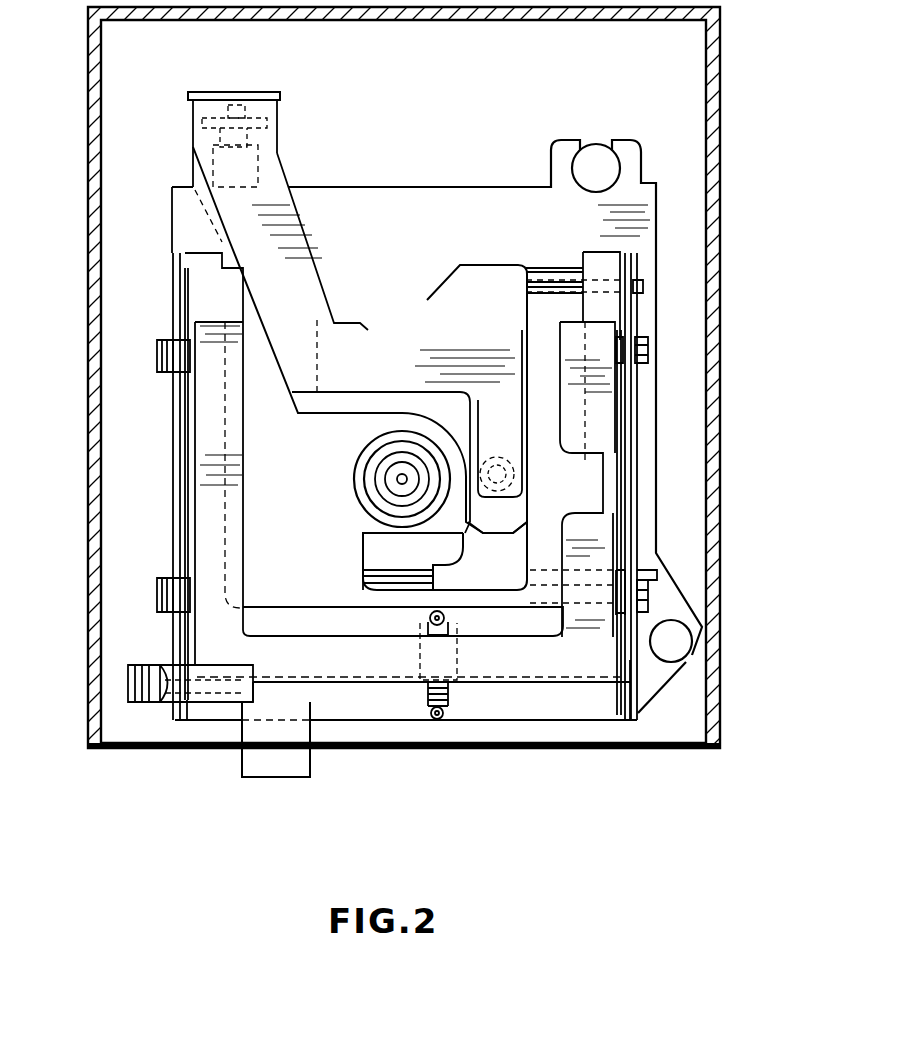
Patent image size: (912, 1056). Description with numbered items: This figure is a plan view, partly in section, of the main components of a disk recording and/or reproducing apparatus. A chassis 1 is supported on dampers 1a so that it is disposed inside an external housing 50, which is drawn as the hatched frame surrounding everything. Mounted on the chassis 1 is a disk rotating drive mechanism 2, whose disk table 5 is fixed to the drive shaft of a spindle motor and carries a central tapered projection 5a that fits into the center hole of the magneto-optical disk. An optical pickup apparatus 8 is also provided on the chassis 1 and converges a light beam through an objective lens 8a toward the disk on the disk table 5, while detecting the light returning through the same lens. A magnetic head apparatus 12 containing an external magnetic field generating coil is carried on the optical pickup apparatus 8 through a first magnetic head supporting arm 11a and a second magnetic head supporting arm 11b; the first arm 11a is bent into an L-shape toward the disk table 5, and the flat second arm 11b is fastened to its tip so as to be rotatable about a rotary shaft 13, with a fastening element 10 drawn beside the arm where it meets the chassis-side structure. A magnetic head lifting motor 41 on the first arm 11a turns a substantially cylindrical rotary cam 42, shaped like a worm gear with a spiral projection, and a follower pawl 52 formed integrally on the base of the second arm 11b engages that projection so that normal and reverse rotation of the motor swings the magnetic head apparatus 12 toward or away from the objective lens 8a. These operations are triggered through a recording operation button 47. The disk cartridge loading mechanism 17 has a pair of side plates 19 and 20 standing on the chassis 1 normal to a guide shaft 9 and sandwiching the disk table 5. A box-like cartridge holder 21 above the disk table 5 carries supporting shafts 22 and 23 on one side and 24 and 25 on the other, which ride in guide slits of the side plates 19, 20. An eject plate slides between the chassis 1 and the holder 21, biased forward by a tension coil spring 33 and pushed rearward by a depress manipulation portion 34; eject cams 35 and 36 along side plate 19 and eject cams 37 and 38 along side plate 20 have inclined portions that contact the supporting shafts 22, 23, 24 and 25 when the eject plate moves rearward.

The chassis 1 is at (647, 428).
The damper 1a is at (598, 143).
The disk rotating drive mechanism 2 is at (363, 545).
The disk table 5 is at (357, 503).
The tapered projection 5a is at (357, 485).
The optical pickup apparatus 8 is at (488, 583).
The objective lens 8a is at (520, 497).
The guide shaft 9 is at (388, 580).
The bolt 10 is at (553, 283).
The first magnetic head supporting arm 11a is at (322, 412).
The second magnetic head supporting arm 11b is at (407, 337).
The magnetic head apparatus 12 is at (493, 497).
The rotary shaft 13 is at (188, 97).
The disk cartridge loading mechanism 17 is at (560, 697).
The side plate 19 is at (177, 720).
The side plate 20 is at (633, 700).
The cartridge holder 21 is at (393, 685).
The supporting shaft 22 is at (157, 593).
The supporting shaft 23 is at (157, 347).
The supporting shaft 24 is at (640, 605).
The supporting shaft 25 is at (648, 350).
The tension coil spring 33 is at (450, 695).
The depress manipulation portion 34 is at (277, 777).
The eject cam 35 is at (187, 643).
The eject cam 36 is at (187, 393).
The eject cam 37 is at (622, 660).
The eject cam 38 is at (622, 387).
The magnetic head lifting motor 41 is at (262, 168).
The rotary cam 42 is at (237, 107).
The recording operation button 47 is at (215, 702).
The external housing 50 is at (720, 300).
The follower pawl 52 is at (267, 124).